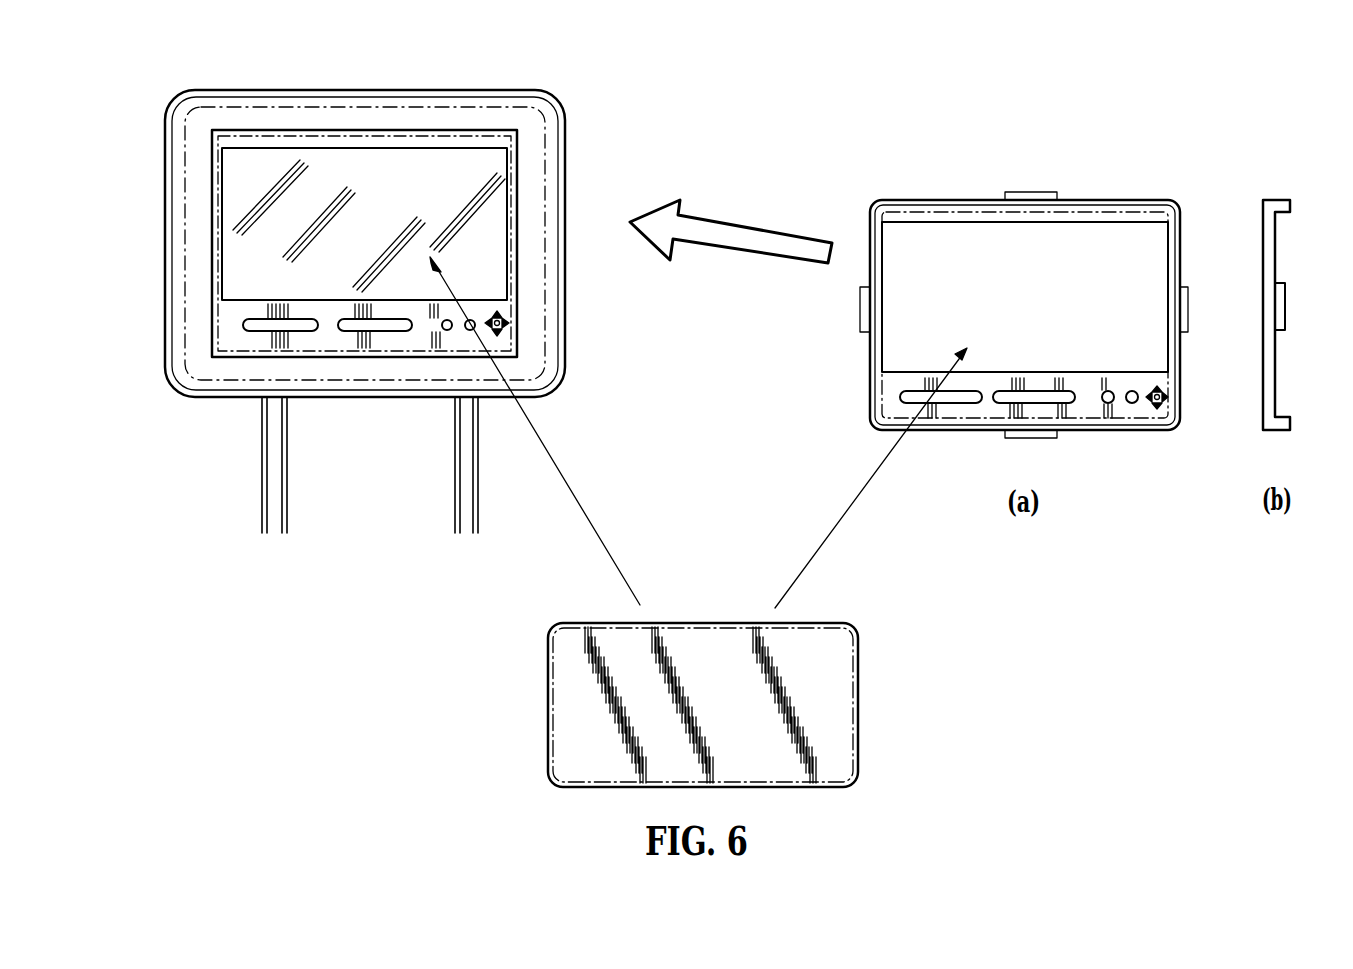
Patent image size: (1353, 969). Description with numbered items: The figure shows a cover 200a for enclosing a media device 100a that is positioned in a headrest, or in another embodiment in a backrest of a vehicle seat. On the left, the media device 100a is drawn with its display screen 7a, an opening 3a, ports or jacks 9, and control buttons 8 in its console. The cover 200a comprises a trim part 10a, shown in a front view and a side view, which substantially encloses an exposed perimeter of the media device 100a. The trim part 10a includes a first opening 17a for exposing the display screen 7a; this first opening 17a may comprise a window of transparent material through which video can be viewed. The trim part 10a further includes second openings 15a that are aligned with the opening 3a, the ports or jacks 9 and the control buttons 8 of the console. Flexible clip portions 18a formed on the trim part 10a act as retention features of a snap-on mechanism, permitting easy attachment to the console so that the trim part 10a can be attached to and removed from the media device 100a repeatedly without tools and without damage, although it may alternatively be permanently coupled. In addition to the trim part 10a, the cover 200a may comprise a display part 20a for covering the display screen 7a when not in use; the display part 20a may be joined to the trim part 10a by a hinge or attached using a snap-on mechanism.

The media device 100a is at (355, 297).
The display screen 7a is at (238, 250).
The control buttons 8 is at (505, 318).
The ports or jacks 9 is at (442, 330).
The opening 3a is at (352, 325).
The cover 200a is at (1072, 314).
The trim part 10a is at (1132, 208).
The first opening 17a is at (905, 335).
The flexible clip portions 18a is at (1045, 192).
The second openings 15a is at (1105, 402).
The display part 20a is at (838, 730).